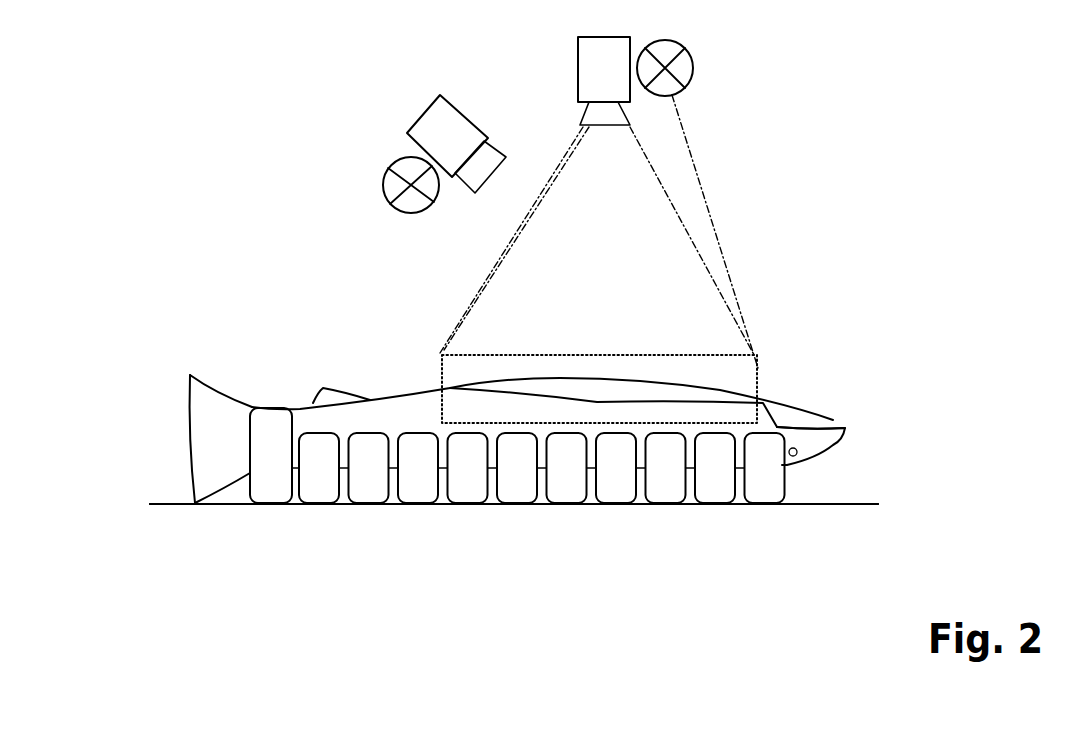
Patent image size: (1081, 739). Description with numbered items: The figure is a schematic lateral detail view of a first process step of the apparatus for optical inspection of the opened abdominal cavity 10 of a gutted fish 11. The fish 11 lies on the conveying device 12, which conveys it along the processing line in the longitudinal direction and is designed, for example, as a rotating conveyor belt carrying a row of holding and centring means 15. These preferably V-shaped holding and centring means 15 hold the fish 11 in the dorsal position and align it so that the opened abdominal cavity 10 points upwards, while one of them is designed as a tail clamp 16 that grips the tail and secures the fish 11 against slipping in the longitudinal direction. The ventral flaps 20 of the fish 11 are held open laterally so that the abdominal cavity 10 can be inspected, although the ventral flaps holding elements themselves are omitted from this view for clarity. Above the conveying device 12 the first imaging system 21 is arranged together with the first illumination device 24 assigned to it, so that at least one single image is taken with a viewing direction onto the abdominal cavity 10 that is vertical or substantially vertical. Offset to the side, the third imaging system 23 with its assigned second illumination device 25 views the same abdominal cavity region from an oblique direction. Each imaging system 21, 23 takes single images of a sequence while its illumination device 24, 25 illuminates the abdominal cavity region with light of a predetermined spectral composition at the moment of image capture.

The opened abdominal cavity 10 is at (597, 395).
The gutted fish 11 is at (777, 402).
The conveying device 12 is at (230, 504).
The holding and centring means 15 is at (513, 483).
The tail clamp 16 is at (270, 425).
The ventral flaps 20 is at (683, 383).
The first imaging system 21 is at (590, 75).
The third imaging system 23 is at (428, 120).
The first illumination device 24 is at (693, 53).
The second illumination device 25 is at (382, 198).